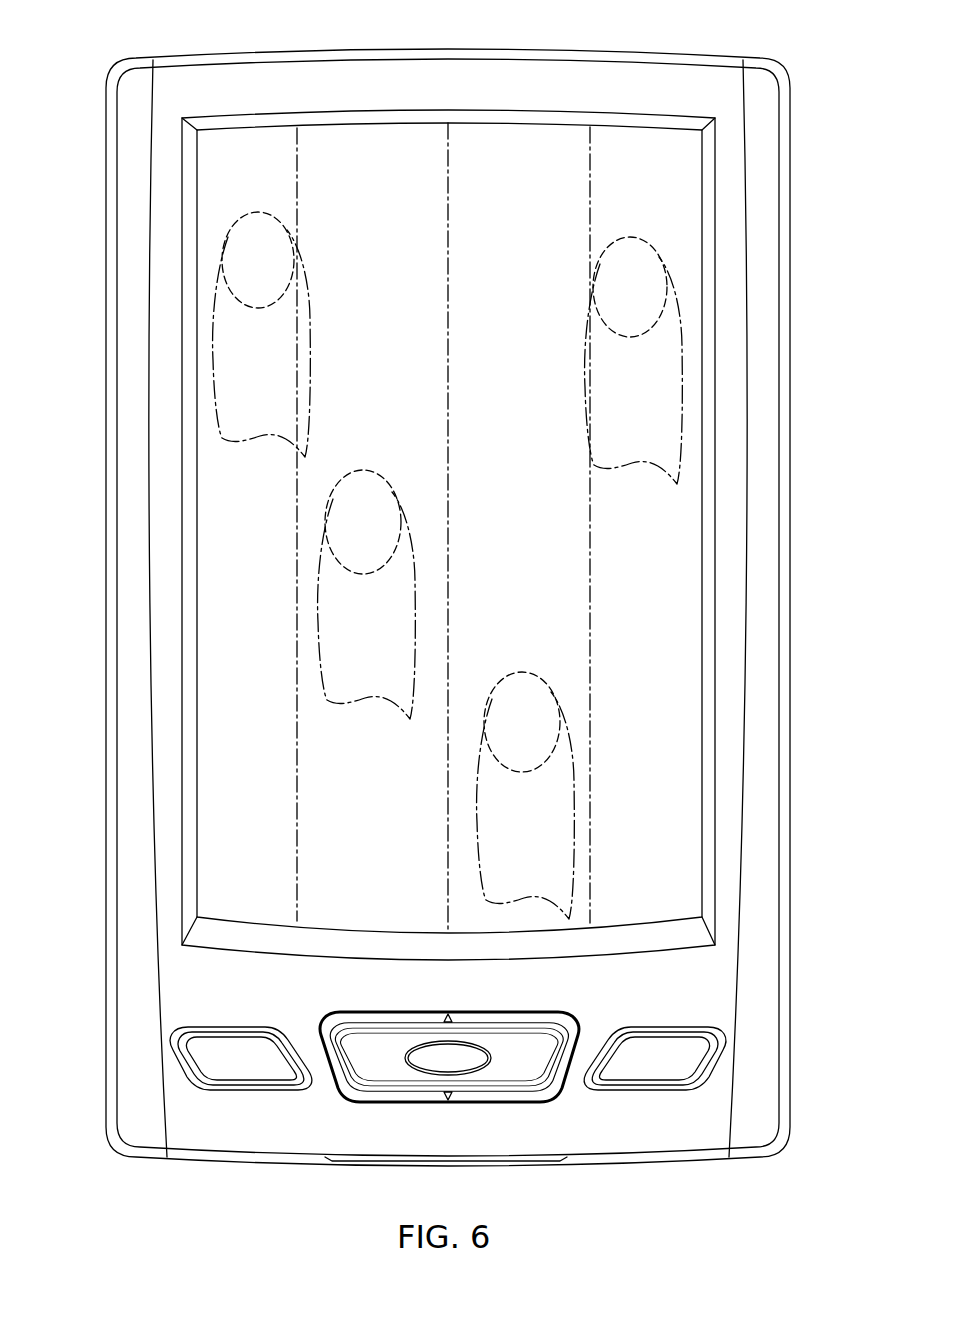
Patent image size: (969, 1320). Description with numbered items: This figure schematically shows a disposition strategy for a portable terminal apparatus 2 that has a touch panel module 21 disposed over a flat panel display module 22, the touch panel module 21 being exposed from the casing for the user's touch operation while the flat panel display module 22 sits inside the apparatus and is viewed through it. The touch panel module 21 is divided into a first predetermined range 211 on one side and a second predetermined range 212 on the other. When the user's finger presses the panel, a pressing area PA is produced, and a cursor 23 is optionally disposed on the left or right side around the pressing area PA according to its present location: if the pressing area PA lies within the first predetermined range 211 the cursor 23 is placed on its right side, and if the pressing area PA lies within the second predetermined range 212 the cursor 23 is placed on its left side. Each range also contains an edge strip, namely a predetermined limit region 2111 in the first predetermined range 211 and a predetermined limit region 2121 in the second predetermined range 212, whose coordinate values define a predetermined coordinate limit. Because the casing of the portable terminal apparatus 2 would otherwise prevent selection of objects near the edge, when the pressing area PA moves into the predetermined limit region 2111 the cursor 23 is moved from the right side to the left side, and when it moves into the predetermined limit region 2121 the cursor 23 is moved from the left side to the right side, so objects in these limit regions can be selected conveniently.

The portable terminal apparatus 2 is at (86, 29).
The touch panel module 21 is at (218, 182).
The flat panel display module 22 is at (449, 528).
The first predetermined range 211 is at (370, 136).
The second predetermined range 212 is at (518, 137).
The predetermined limit region 2111 is at (205, 590).
The predetermined limit region 2121 is at (680, 658).
The cursor 23 is at (210, 224).
The pressing area PA is at (283, 257).